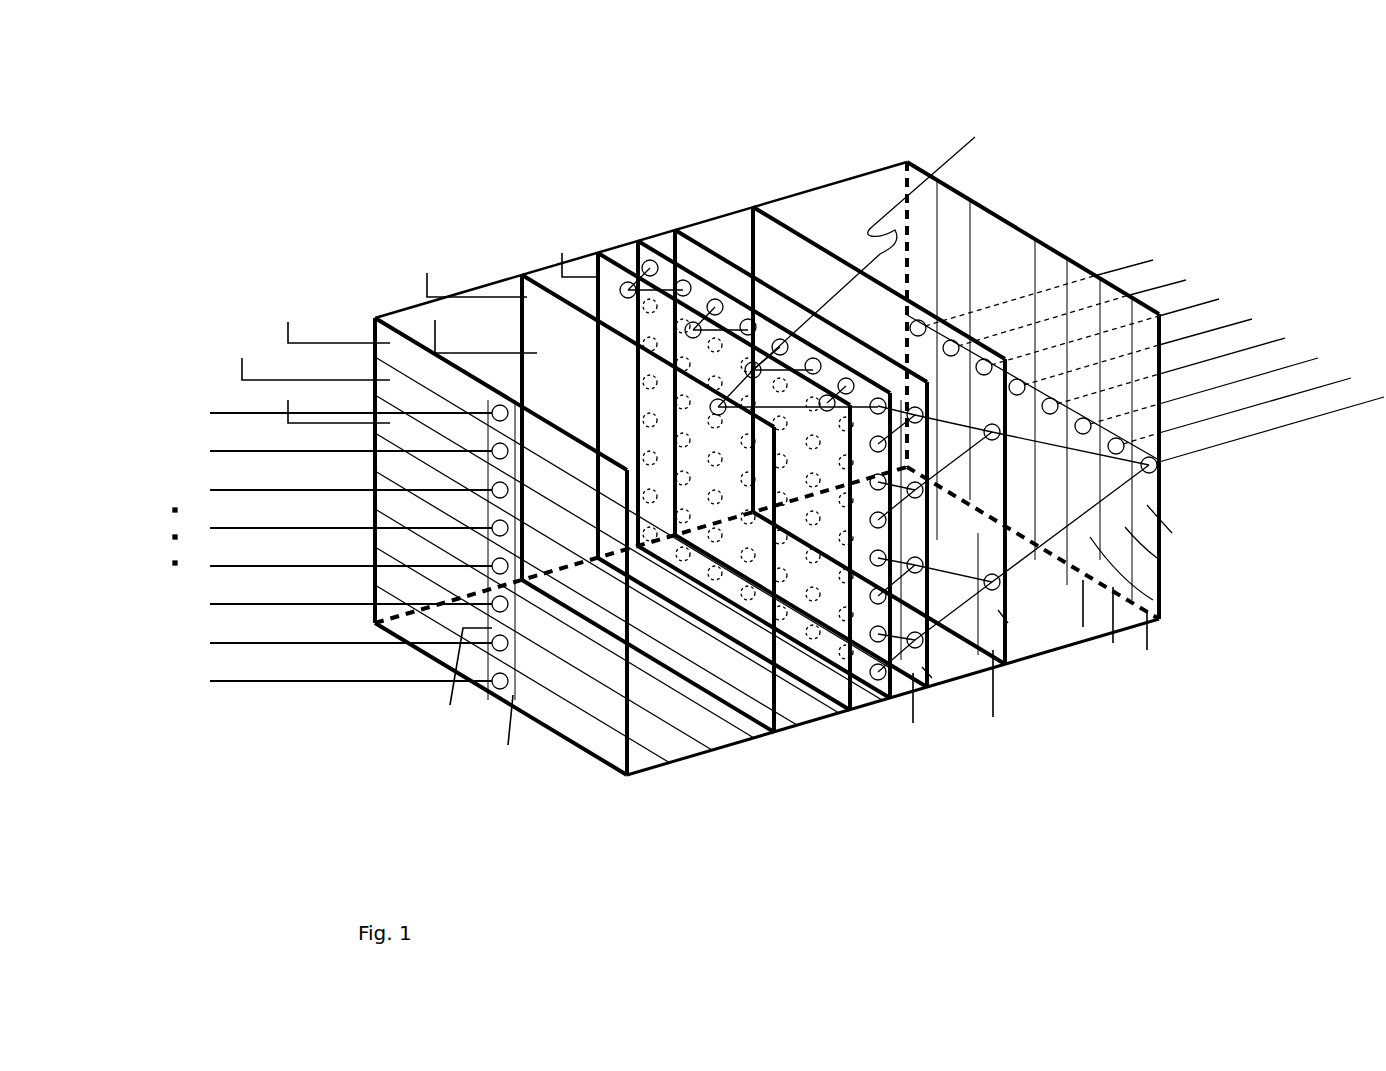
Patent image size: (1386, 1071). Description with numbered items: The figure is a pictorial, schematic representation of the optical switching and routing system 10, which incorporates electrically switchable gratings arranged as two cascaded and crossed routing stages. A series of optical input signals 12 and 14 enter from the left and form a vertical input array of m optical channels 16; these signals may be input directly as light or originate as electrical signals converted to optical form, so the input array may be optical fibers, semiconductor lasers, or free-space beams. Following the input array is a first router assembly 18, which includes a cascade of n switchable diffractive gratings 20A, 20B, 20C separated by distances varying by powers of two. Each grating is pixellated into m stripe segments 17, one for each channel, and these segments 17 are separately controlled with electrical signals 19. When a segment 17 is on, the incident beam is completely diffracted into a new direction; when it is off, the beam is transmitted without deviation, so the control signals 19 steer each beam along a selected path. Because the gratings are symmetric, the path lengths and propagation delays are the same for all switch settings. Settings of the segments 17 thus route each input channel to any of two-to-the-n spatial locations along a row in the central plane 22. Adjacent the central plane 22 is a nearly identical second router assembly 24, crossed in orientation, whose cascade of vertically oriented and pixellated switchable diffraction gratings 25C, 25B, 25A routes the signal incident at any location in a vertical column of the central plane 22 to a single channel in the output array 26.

The optical switching and routing system 10 is at (628, 124).
The optical input signal 12 is at (327, 412).
The optical input signal 14 is at (327, 561).
The optical channels 16 is at (515, 600).
The grating segments 17 is at (613, 282).
The first router assembly 18 is at (802, 758).
The electrical signals 19 is at (438, 272).
The switchable diffractive grating 20A is at (375, 318).
The switchable diffractive grating 20B is at (522, 275).
The switchable diffractive grating 20C is at (598, 253).
The central plane 22 is at (811, 407).
The second router assembly 24 is at (1042, 686).
The switchable diffraction grating 25A is at (907, 162).
The switchable diffraction grating 25B is at (753, 207).
The switchable diffraction grating 25C is at (675, 230).
The output array 26 is at (1024, 372).